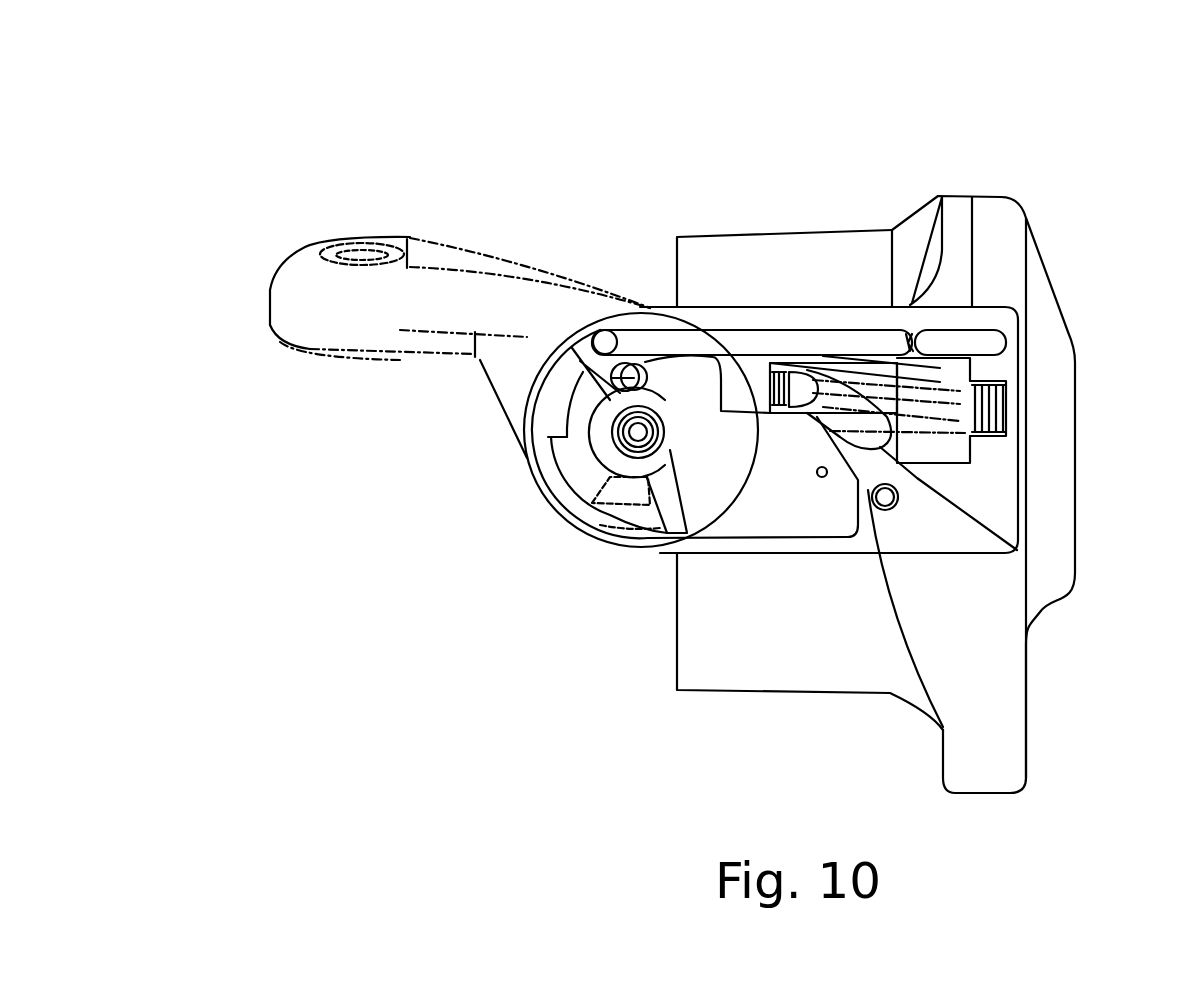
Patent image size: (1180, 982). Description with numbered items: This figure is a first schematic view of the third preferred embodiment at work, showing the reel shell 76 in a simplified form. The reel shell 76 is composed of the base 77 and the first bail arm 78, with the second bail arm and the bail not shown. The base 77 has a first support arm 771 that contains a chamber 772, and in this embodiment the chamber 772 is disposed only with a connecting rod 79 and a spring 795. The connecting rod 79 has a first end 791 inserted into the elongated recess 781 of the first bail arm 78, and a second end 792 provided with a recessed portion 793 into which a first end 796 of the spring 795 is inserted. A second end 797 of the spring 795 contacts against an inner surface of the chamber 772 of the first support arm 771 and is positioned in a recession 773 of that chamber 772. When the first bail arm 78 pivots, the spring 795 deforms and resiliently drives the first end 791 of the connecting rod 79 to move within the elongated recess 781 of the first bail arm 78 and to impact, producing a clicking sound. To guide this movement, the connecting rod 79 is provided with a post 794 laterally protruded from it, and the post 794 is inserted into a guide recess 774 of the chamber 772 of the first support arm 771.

The reel shell 76 is at (372, 130).
The base 77 is at (822, 253).
The first bail arm 78 is at (297, 295).
The connecting rod 79 is at (700, 372).
The first support arm 771 is at (847, 577).
The chamber 772 is at (797, 485).
The recession 773 is at (1006, 418).
The guide recess 774 is at (985, 435).
The elongated recess 781 is at (654, 314).
The first end 791 is at (572, 345).
The second end 792 is at (904, 400).
The recessed portion 793 is at (853, 377).
The post 794 is at (891, 632).
The spring 795 is at (1007, 398).
The first end 796 is at (764, 372).
The second end 797 is at (1005, 415).